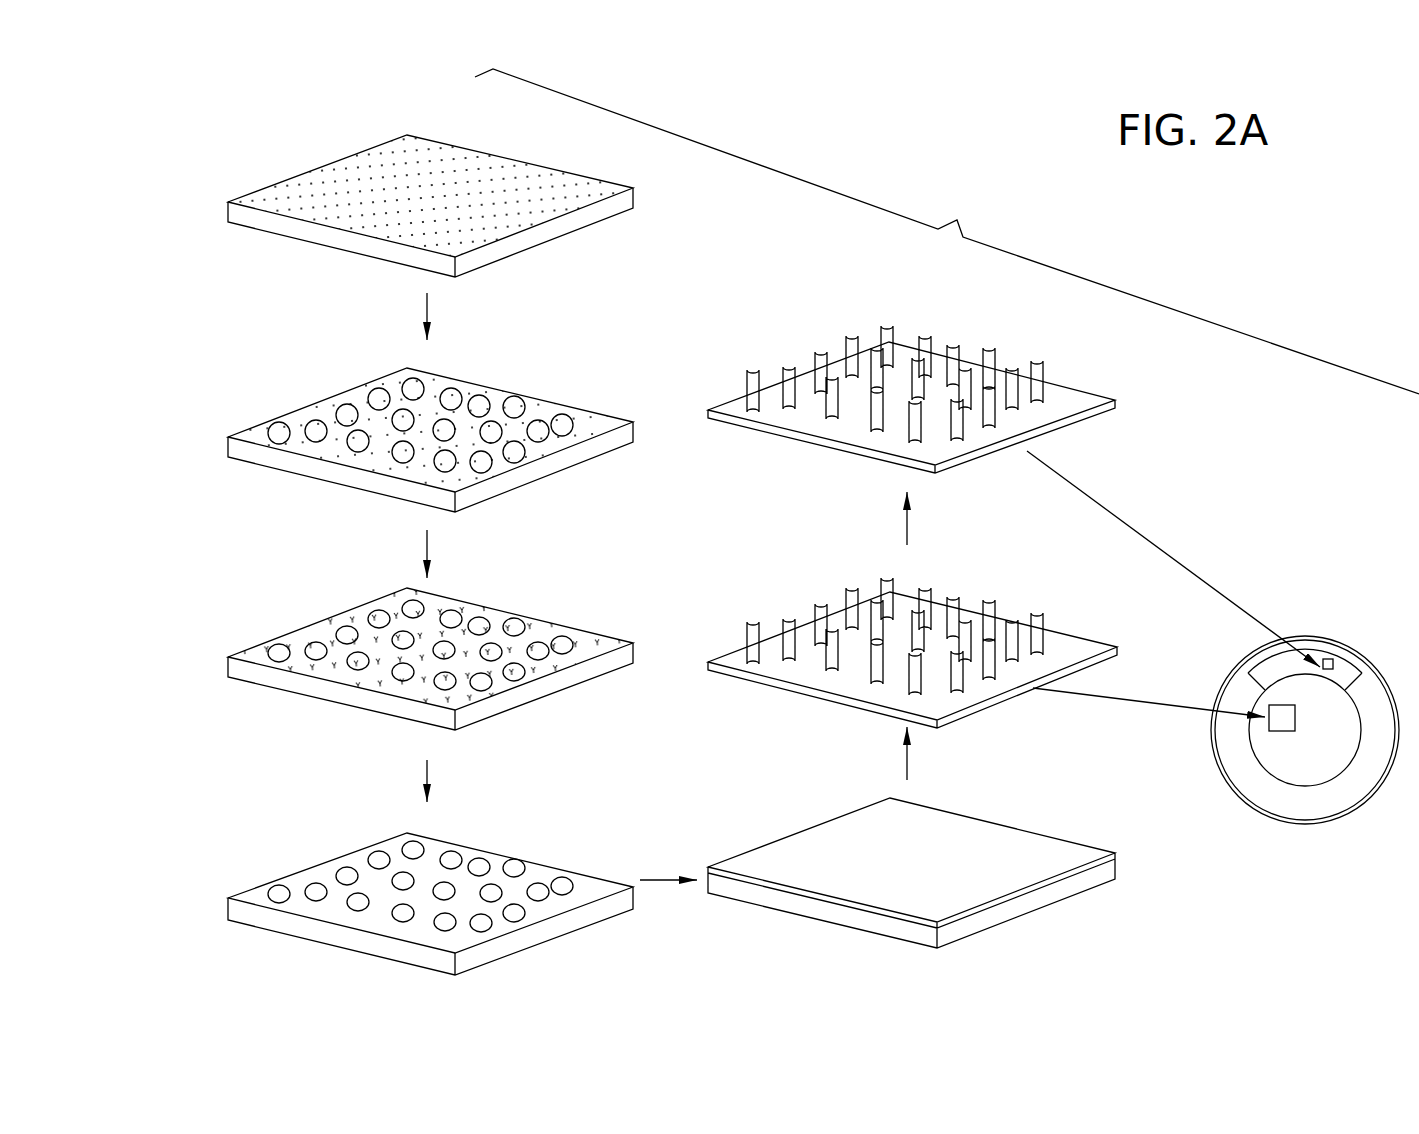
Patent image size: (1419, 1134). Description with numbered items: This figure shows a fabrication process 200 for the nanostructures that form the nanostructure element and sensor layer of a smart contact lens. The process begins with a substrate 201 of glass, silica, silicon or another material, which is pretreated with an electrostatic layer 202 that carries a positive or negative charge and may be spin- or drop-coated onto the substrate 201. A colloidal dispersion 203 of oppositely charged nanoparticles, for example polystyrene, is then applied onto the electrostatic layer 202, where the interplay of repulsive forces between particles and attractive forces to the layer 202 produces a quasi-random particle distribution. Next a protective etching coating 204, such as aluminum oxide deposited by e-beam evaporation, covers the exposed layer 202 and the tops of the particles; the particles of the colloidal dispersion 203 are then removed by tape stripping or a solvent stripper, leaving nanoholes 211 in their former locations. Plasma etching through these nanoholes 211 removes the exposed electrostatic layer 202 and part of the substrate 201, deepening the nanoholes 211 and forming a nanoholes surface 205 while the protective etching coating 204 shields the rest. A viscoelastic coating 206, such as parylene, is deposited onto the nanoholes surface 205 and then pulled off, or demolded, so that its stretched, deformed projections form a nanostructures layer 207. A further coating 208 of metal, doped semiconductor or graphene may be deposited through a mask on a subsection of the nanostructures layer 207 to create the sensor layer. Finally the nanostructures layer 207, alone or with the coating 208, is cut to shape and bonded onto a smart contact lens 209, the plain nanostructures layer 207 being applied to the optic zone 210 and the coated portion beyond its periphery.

The fabrication process 200 is at (1012, 202).
The substrate 201 is at (458, 277).
The electrostatic layer 202 is at (402, 137).
The colloidal dispersion 203 is at (309, 407).
The protective etching coating 204 is at (402, 586).
The nanoholes surface 205 is at (313, 890).
The coating 206 is at (940, 921).
The nanostructures layer 207 is at (797, 598).
The coating 208 is at (1132, 394).
The smart contact lens 209 is at (1374, 826).
The optic zone 210 is at (1294, 756).
The nanoholes 211 is at (350, 662).